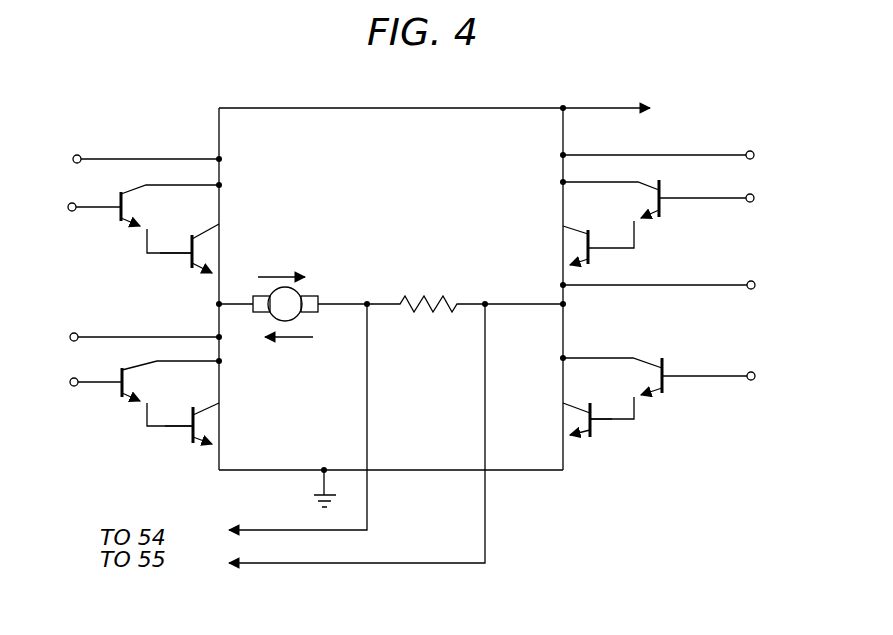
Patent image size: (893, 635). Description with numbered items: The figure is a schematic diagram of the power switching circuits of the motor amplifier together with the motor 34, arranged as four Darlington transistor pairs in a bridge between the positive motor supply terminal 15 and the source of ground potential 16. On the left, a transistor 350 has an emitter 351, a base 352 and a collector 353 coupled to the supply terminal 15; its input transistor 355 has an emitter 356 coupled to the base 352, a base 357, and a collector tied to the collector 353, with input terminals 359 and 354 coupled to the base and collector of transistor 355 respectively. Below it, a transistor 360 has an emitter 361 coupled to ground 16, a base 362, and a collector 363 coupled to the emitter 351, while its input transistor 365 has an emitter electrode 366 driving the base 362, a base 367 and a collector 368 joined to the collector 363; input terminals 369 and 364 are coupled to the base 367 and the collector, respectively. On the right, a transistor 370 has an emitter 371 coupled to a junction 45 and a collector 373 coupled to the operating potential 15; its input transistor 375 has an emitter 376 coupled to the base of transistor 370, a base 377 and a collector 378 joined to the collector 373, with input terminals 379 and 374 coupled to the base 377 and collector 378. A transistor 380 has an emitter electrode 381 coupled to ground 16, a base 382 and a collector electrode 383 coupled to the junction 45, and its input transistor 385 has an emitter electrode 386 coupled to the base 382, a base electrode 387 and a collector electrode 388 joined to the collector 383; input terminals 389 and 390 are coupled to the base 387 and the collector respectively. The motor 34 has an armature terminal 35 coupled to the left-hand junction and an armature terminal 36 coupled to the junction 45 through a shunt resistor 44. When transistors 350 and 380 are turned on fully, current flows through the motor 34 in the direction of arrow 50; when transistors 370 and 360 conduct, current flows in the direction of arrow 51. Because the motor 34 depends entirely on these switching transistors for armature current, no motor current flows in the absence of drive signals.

The positive motor supply terminal 15 is at (592, 106).
The source of ground potential 16 is at (324, 480).
The motor 34 is at (305, 297).
The armature terminal 35 is at (258, 312).
The armature terminal 36 is at (310, 312).
The shunt resistor 44 is at (430, 297).
The junction 45 is at (488, 307).
The arrow 50 is at (275, 276).
The arrow 51 is at (305, 337).
The transistor 350 is at (200, 254).
The emitter 351 is at (215, 278).
The base 352 is at (170, 253).
The collector 353 is at (200, 232).
The input terminal 354 is at (78, 155).
The transistor 355 is at (140, 208).
The emitter 356 is at (147, 240).
The base 357 is at (98, 210).
The input terminal 359 is at (72, 203).
The transistor 360 is at (205, 425).
The emitter 361 is at (222, 447).
The base 362 is at (172, 430).
The collector 363 is at (212, 407).
The input terminal 364 is at (74, 333).
The transistor 365 is at (135, 380).
The emitter electrode 366 is at (147, 410).
The base 367 is at (98, 386).
The collector 368 is at (160, 361).
The input terminal 369 is at (74, 378).
The transistor 370 is at (578, 247).
The emitter 371 is at (572, 262).
The collector 373 is at (562, 227).
The input terminal 374 is at (755, 137).
The transistor 375 is at (645, 203).
The emitter 376 is at (636, 232).
The base 377 is at (700, 198).
The collector 378 is at (645, 182).
The input terminal 379 is at (750, 203).
The transistor 380 is at (578, 421).
The emitter electrode 381 is at (568, 437).
The base 382 is at (612, 422).
The collector electrode 383 is at (562, 405).
The transistor 385 is at (650, 378).
The emitter electrode 386 is at (636, 402).
The base electrode 387 is at (695, 376).
The collector electrode 388 is at (640, 358).
The input terminal 389 is at (751, 381).
The input terminal 390 is at (751, 290).